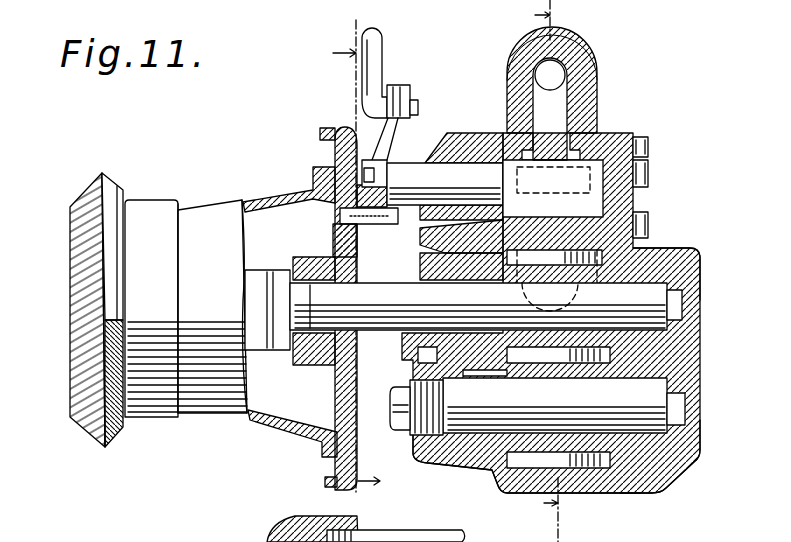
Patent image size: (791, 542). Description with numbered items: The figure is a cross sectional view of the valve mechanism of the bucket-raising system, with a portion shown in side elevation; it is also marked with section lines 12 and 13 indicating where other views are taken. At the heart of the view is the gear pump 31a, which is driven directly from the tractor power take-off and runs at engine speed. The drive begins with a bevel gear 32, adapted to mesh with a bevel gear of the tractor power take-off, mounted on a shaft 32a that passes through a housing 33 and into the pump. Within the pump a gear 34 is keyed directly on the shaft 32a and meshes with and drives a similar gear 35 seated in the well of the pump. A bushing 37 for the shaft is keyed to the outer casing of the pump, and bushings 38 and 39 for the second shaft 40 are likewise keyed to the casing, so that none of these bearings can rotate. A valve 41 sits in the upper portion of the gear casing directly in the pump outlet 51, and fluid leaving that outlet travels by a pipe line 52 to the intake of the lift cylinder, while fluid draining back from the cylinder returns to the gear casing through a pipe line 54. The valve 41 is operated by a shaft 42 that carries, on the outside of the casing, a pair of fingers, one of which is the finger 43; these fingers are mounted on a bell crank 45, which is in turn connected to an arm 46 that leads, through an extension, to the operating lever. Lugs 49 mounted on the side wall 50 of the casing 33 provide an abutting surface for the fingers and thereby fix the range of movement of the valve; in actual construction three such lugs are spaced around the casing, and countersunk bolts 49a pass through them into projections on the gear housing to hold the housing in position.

The section line 12- 12 is at (554, 271).
The section line 13- 13 is at (356, 264).
The pump 31a is at (700, 262).
The bevel gear 32 is at (82, 432).
The shaft 32a is at (486, 306).
The housing 33 is at (268, 436).
The gear 34 is at (591, 278).
The gear 35 is at (596, 492).
The bushing 37 is at (657, 267).
The bushing 38 is at (458, 462).
The bushing 39 is at (656, 463).
The shaft 40 is at (537, 406).
The valve 41 is at (608, 152).
The shaft 42 is at (407, 177).
The finger 43 is at (386, 242).
The bell crank 45 is at (412, 88).
The arm 46 is at (380, 42).
The lug 49 is at (340, 238).
The countersunk bolt 49a is at (340, 214).
The side wall 50 is at (337, 392).
The outlet 51 is at (597, 52).
The pipe line 52 is at (567, 76).
The pipe line 54 is at (403, 536).